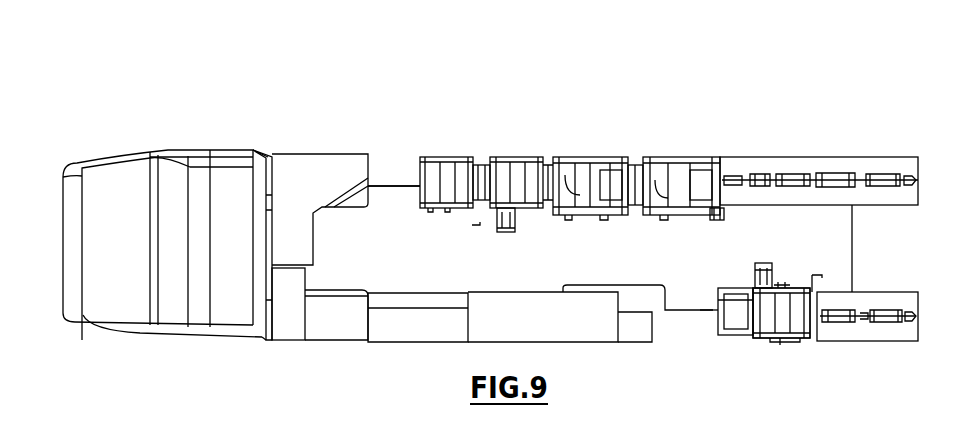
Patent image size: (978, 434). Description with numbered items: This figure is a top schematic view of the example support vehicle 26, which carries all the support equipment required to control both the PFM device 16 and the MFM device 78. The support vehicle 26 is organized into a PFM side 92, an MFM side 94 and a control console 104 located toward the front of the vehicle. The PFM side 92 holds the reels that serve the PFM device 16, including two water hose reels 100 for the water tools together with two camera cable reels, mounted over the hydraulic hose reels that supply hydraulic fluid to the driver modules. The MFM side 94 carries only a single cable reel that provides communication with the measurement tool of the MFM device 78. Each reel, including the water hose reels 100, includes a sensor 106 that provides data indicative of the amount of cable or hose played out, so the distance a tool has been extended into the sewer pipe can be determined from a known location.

The support vehicle 26 is at (320, 107).
The control console 104 is at (317, 167).
The water hose reel 100 is at (676, 178).
The PFM side 92 is at (700, 145).
The PFM device 16 is at (830, 158).
The sensor 106 is at (543, 220).
The MFM side 94 is at (723, 347).
The MFM device 78 is at (900, 283).